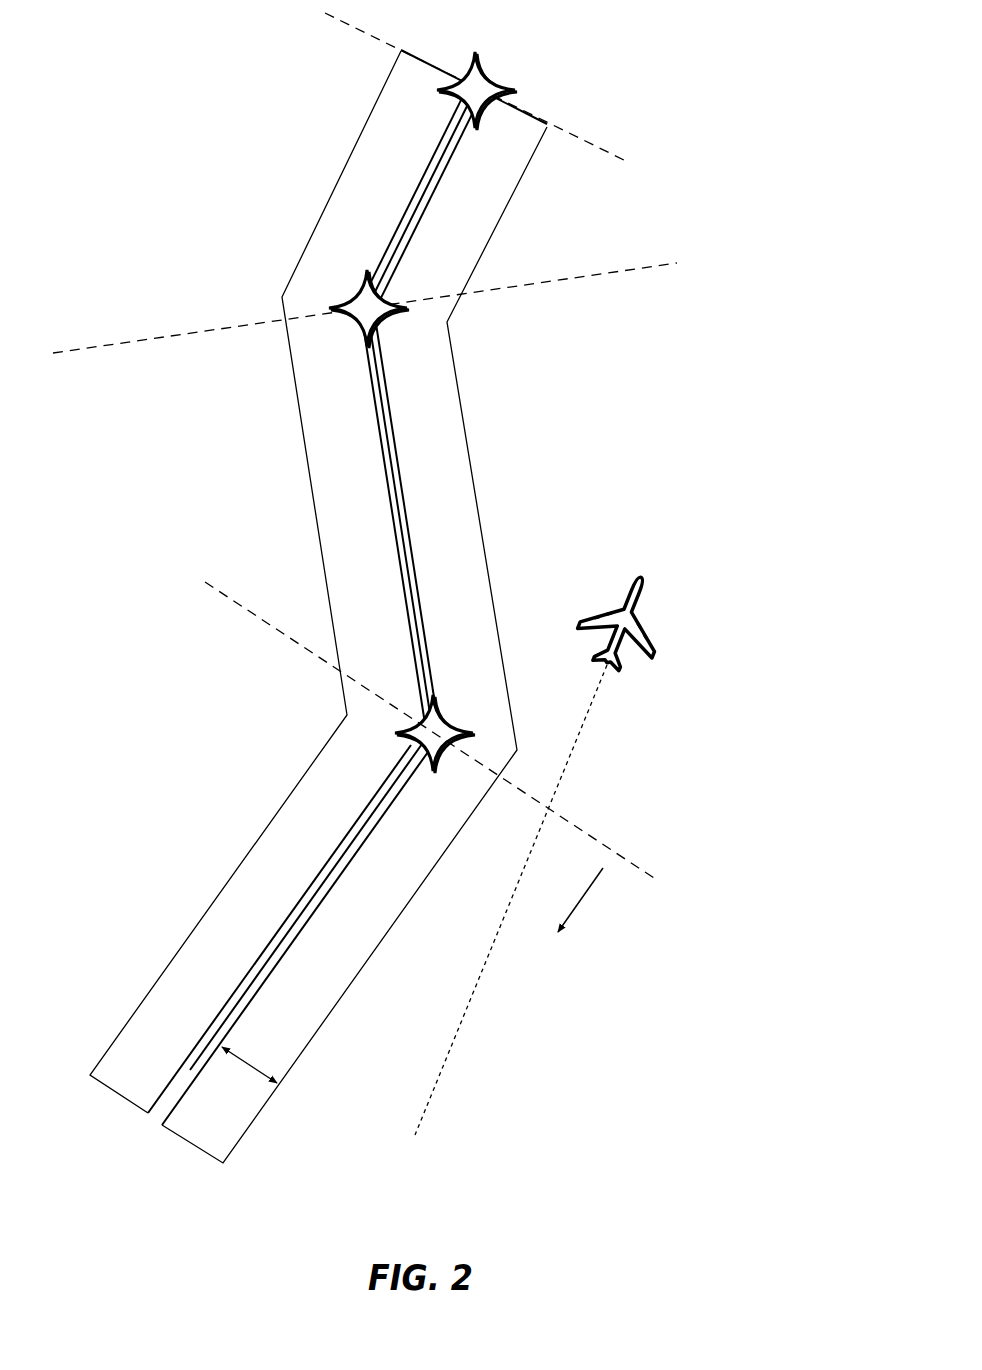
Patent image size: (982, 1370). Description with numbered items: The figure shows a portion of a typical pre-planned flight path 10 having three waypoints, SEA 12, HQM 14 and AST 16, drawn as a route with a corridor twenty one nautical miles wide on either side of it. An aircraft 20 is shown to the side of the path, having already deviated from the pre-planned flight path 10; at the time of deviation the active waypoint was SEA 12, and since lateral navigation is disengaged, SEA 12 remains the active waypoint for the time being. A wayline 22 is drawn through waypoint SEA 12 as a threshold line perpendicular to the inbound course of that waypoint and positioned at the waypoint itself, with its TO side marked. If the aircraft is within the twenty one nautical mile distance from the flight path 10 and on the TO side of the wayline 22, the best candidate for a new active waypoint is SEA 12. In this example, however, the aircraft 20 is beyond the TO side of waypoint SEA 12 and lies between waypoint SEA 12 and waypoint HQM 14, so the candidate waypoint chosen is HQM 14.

The flight path 10 is at (270, 958).
The waypoint SEA 12 is at (388, 746).
The waypoint HQM 14 is at (352, 292).
The waypoint AST 16 is at (496, 70).
The aircraft 20 is at (648, 585).
The wayline 22 is at (557, 818).